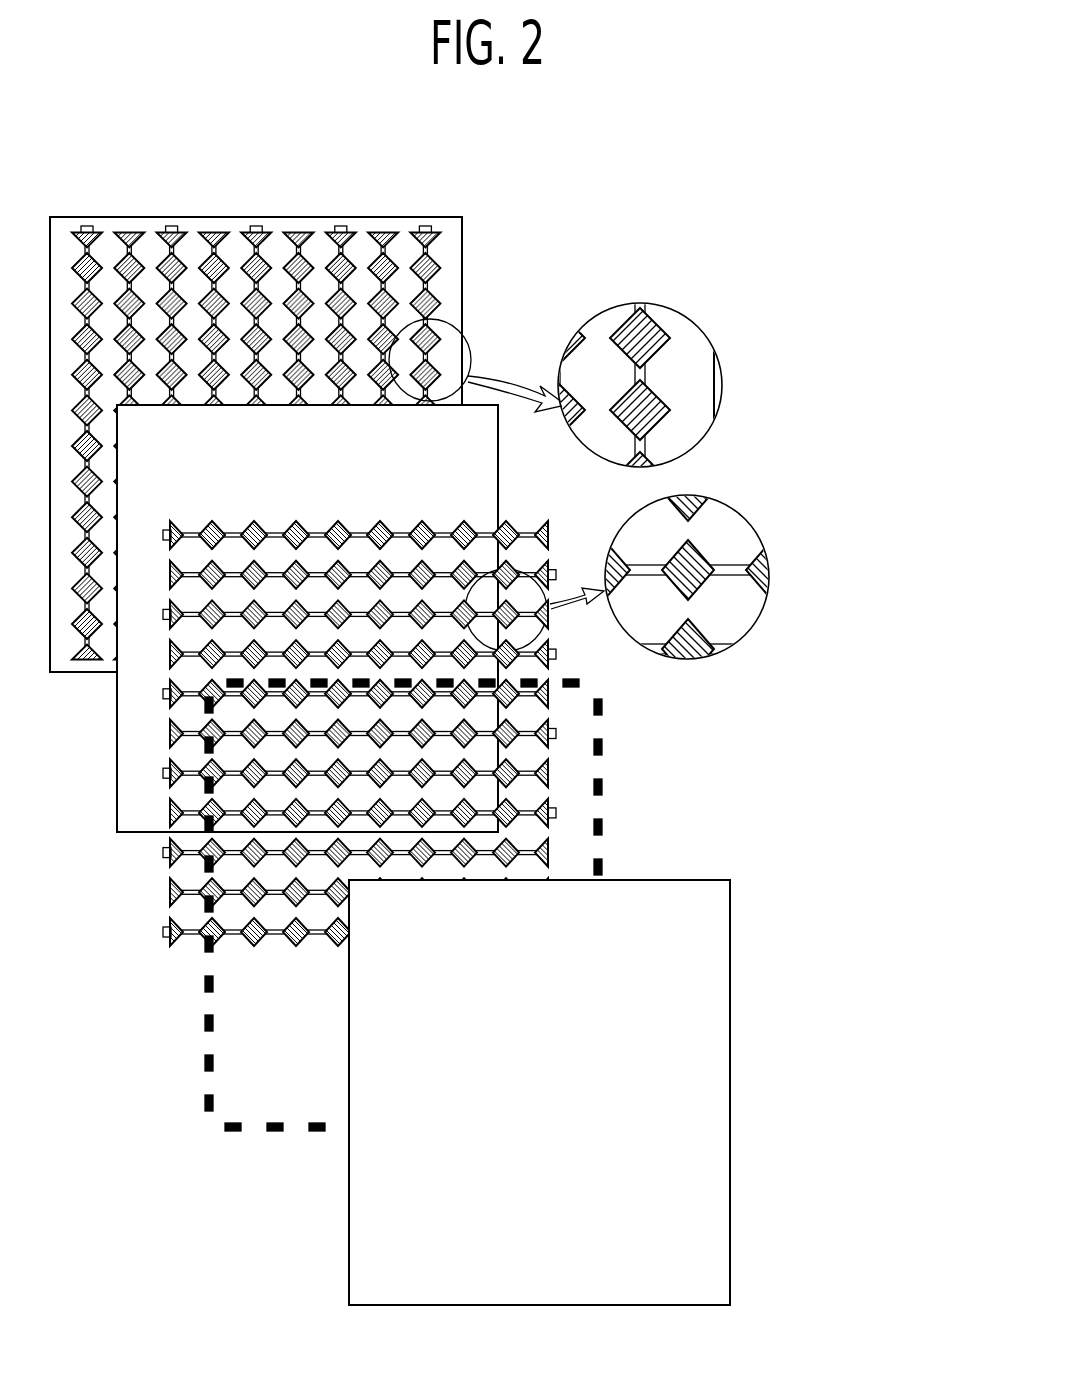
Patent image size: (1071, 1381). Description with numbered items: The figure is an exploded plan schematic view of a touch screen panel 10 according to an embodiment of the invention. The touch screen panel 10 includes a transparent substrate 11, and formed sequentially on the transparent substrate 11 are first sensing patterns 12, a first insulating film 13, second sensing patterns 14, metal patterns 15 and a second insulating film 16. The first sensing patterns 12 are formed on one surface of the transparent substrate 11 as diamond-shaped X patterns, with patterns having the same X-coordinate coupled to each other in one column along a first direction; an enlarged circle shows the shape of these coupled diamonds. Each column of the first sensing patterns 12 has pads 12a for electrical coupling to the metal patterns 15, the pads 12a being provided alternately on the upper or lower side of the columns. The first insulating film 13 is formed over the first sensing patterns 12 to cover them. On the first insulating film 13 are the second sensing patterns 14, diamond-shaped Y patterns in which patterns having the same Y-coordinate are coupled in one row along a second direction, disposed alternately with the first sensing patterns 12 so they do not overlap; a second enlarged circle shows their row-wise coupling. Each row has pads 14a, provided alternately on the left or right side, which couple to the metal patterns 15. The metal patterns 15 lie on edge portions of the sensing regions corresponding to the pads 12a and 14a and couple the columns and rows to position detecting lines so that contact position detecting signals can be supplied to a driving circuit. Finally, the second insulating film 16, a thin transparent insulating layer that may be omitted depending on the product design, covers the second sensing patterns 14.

The touch screen panel 10 is at (473, 731).
The transparent substrate 11 is at (397, 414).
The first sensing patterns 12 is at (408, 408).
The pads 12a is at (426, 226).
The first insulating film 13 is at (498, 470).
The second sensing patterns 14 is at (511, 692).
The pads 14a is at (160, 532).
The metal patterns 15 is at (604, 745).
The second insulating film 16 is at (731, 900).